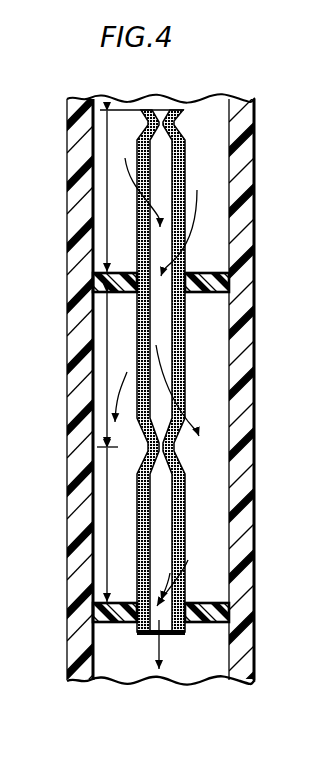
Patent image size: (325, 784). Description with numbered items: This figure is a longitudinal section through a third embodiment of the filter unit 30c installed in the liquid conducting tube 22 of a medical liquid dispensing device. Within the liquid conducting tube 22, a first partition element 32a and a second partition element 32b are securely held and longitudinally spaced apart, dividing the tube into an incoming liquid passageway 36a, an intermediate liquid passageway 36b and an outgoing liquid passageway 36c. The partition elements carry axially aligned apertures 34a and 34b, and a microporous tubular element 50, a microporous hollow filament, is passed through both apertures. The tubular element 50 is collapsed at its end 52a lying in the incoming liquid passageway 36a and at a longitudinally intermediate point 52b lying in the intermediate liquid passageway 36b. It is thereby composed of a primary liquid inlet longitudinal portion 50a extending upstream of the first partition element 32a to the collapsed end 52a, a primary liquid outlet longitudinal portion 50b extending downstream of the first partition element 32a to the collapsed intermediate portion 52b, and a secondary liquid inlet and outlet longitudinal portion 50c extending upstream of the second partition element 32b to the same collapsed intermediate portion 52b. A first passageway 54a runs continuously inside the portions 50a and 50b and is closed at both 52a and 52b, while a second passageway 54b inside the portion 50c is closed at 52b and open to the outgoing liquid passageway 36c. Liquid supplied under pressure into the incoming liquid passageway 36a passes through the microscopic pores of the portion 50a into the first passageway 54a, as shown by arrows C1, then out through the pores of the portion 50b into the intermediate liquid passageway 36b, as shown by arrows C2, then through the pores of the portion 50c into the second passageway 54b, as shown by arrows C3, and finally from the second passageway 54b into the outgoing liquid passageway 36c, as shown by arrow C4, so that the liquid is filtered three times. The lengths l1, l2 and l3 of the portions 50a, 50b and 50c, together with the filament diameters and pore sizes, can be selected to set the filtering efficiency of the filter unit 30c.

The liquid conducting tube 22 is at (67, 163).
The filter unit 30c is at (126, 646).
The first partition element 32a is at (213, 296).
The second partition element 32b is at (202, 630).
The aperture 34a is at (136, 293).
The aperture 34b is at (186, 595).
The incoming liquid passageway 36a is at (210, 108).
The intermediate liquid passageway 36b is at (213, 480).
The outgoing liquid passageway 36c is at (222, 667).
The microporous tubular element 50 is at (163, 106).
The primary liquid inlet longitudinal portion 50a is at (186, 171).
The primary liquid outlet longitudinal portion 50b is at (186, 362).
The secondary liquid inlet and outlet longitudinal portion 50c is at (137, 527).
The collapsed end 52a is at (141, 123).
The collapsed intermediate point or portion 52b is at (176, 448).
The first passageway 54a is at (158, 290).
The second passageway 54b is at (164, 626).
The arrows C1 is at (115, 191).
The arrows C2 is at (115, 448).
The arrows C3 is at (197, 520).
The arrow C4 is at (153, 648).
The length l1 is at (109, 191).
The length l2 is at (107, 370).
The length l3 is at (106, 525).